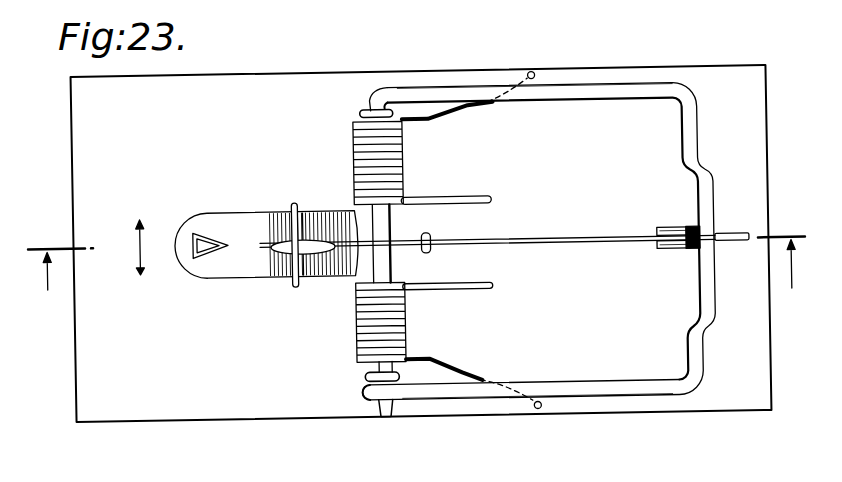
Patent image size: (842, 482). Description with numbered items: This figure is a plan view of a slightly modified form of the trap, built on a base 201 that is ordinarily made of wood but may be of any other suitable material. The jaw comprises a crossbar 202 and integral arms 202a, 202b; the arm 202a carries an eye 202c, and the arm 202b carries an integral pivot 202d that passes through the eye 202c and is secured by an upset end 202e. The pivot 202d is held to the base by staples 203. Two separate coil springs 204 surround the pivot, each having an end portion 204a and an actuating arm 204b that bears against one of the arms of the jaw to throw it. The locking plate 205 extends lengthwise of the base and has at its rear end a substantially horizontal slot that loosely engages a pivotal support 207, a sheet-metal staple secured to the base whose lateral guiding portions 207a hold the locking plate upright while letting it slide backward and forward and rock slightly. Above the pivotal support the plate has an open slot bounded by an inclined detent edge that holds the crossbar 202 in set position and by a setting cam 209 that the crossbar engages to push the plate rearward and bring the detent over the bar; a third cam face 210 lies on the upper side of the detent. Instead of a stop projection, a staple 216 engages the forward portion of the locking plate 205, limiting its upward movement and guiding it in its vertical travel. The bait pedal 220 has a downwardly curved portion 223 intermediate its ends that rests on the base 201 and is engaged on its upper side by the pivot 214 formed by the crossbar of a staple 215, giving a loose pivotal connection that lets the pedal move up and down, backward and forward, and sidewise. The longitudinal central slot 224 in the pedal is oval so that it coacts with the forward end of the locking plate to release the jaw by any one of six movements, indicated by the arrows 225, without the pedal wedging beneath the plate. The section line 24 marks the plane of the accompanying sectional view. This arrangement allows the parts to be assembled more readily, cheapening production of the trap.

The base 201 is at (280, 74).
The crossbar 202 is at (716, 195).
The arm of jaw 202a is at (572, 411).
The arm of jaw 202b is at (573, 93).
The eye 202c is at (357, 391).
The pivot 202d is at (390, 216).
The upset end 202e is at (370, 416).
The staples 203 is at (372, 107).
The coil springs 204 is at (406, 150).
The end portion of spring 204a is at (479, 198).
The actuating arm of spring 204b is at (482, 109).
The locking plate 205 is at (540, 242).
The pivotal support 207 is at (673, 232).
The lateral guiding portions 207a is at (665, 252).
The setting cam 209 is at (727, 240).
The third cam face 210 is at (690, 257).
The pivot 214 is at (300, 270).
The staple 215 is at (294, 214).
The staple 216 is at (433, 248).
The bait pedal 220 is at (210, 266).
The downwardly curved portion 223 is at (285, 245).
The longitudinal central slot 224 is at (322, 270).
The arrows 225 is at (197, 230).
The section line 24 is at (419, 277).